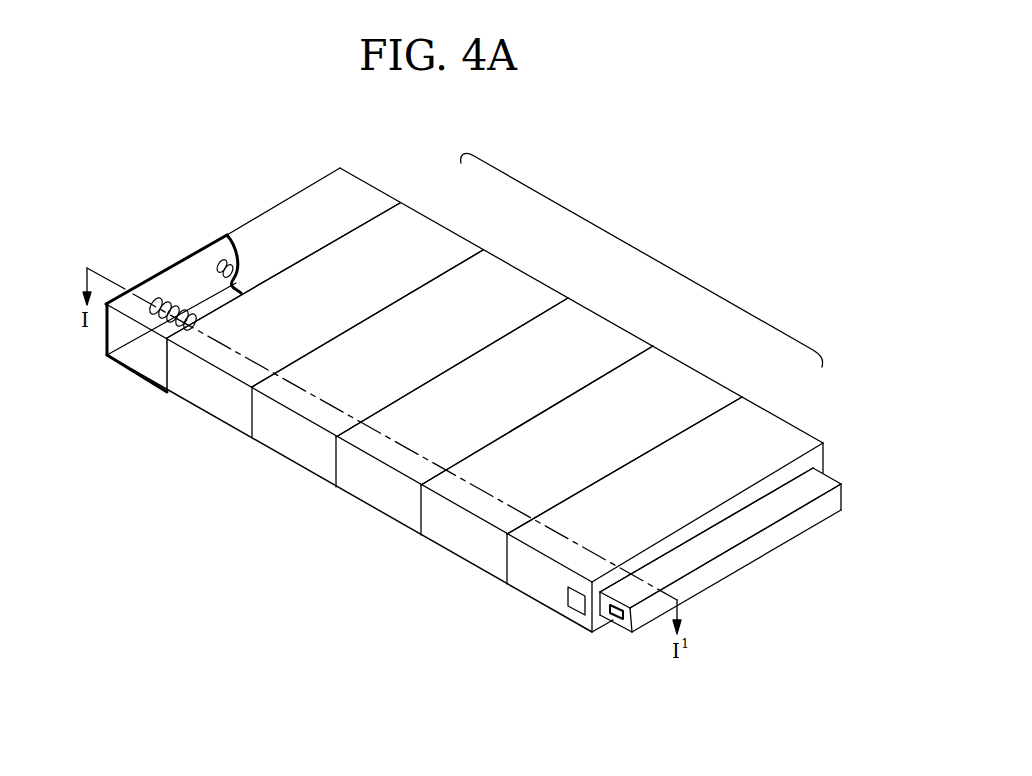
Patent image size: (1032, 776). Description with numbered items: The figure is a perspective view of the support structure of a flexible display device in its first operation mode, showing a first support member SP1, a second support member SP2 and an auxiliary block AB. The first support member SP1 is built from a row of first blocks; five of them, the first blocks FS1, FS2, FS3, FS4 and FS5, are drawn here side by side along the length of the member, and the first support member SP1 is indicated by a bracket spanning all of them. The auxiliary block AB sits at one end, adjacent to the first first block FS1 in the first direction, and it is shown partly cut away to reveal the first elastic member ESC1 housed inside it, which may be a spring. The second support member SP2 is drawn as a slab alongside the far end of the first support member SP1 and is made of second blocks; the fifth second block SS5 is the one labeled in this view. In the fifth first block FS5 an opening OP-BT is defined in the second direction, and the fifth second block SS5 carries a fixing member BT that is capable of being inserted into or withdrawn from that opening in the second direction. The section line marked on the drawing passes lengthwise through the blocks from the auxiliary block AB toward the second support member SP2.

The auxiliary block AB is at (353, 195).
The first elastic member ESC1 is at (157, 300).
The 1-th first block FS1 is at (428, 233).
The 2-th first block FS2 is at (513, 282).
The 3-th first block FS3 is at (597, 332).
The 4-th first block FS4 is at (683, 378).
The 5-th first block FS5 is at (768, 427).
The first support member SP1 is at (642, 260).
The second support member SP2 is at (818, 513).
The 5-th second block SS5 is at (725, 542).
The opening OP-BT is at (573, 600).
The fixing member BT is at (618, 618).